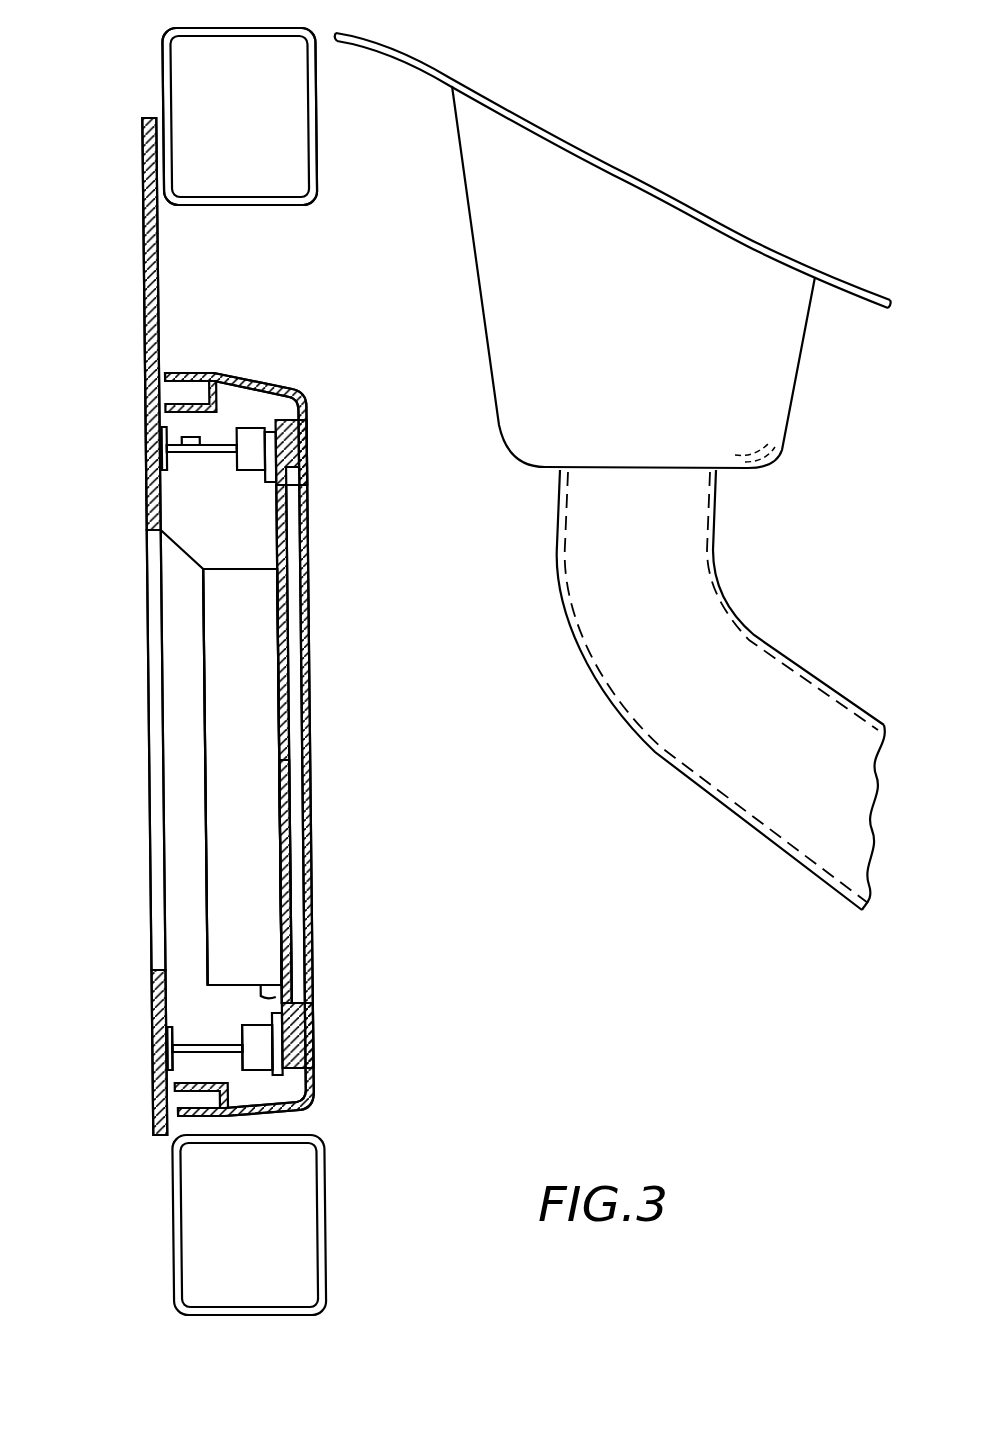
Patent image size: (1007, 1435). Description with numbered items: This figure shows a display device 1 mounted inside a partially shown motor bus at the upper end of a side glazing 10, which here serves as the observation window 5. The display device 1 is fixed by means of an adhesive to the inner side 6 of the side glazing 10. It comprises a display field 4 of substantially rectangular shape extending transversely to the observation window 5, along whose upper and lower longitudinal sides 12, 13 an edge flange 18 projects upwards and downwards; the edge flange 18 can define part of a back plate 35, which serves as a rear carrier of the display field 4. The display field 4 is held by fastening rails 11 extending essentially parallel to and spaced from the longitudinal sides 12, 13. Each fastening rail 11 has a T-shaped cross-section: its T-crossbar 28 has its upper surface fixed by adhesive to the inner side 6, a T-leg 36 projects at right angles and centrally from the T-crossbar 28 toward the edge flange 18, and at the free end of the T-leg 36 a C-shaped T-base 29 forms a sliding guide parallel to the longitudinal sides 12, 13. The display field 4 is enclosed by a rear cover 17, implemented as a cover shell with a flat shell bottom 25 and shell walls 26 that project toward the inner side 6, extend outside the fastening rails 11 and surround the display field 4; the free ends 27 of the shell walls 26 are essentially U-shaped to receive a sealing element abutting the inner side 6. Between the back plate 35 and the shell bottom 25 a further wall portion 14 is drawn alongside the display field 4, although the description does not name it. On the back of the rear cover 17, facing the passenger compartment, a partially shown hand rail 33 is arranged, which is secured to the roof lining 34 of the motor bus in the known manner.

The display device 1 is at (195, 815).
The display field 4 is at (205, 692).
The observation window 5 is at (136, 637).
The inner side 6 is at (160, 233).
The side glazing 10 is at (150, 328).
The fastening rail 11 is at (223, 437).
The longitudinal side 12 is at (225, 570).
The longitudinal side 13 is at (285, 992).
The inner wall of housing 14 is at (290, 865).
The rear cover 17 is at (322, 764).
The edge flange 18 is at (308, 510).
The shell bottom 25 is at (304, 632).
The shell wall 26 is at (253, 378).
The free end 27 is at (166, 376).
The T-crossbar 28 is at (155, 1037).
The T-base 29 is at (263, 1060).
The hand rail 33 is at (702, 690).
The roof lining 34 is at (618, 170).
The back plate 35 is at (285, 942).
The T-leg 36 is at (192, 447).